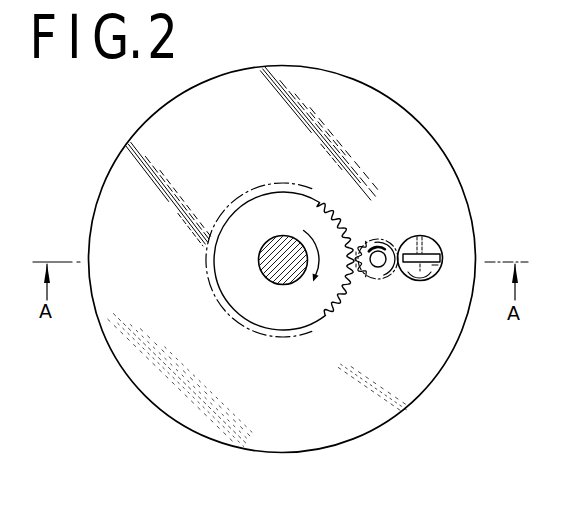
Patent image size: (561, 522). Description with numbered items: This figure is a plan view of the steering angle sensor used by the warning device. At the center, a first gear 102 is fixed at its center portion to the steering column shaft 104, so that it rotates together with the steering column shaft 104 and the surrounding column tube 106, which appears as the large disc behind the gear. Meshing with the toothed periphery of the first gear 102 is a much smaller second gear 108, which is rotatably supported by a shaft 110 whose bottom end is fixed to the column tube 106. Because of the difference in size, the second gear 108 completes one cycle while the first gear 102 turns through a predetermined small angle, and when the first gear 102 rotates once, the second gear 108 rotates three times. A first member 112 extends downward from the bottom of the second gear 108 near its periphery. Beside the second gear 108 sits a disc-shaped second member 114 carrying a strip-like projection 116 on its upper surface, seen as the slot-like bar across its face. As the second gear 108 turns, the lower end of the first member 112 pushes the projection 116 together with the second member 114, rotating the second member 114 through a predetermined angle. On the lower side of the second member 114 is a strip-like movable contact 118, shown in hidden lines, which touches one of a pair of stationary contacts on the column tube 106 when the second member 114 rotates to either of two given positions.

The first gear 102 is at (307, 302).
The steering column shaft 104 is at (282, 237).
The column tube 106 is at (340, 96).
The second gear 108 is at (370, 233).
The shaft 110 is at (381, 267).
The first member 112 is at (364, 278).
The second member 114 is at (440, 248).
The strip-like projection 116 is at (438, 275).
The movable contact 118 is at (423, 236).